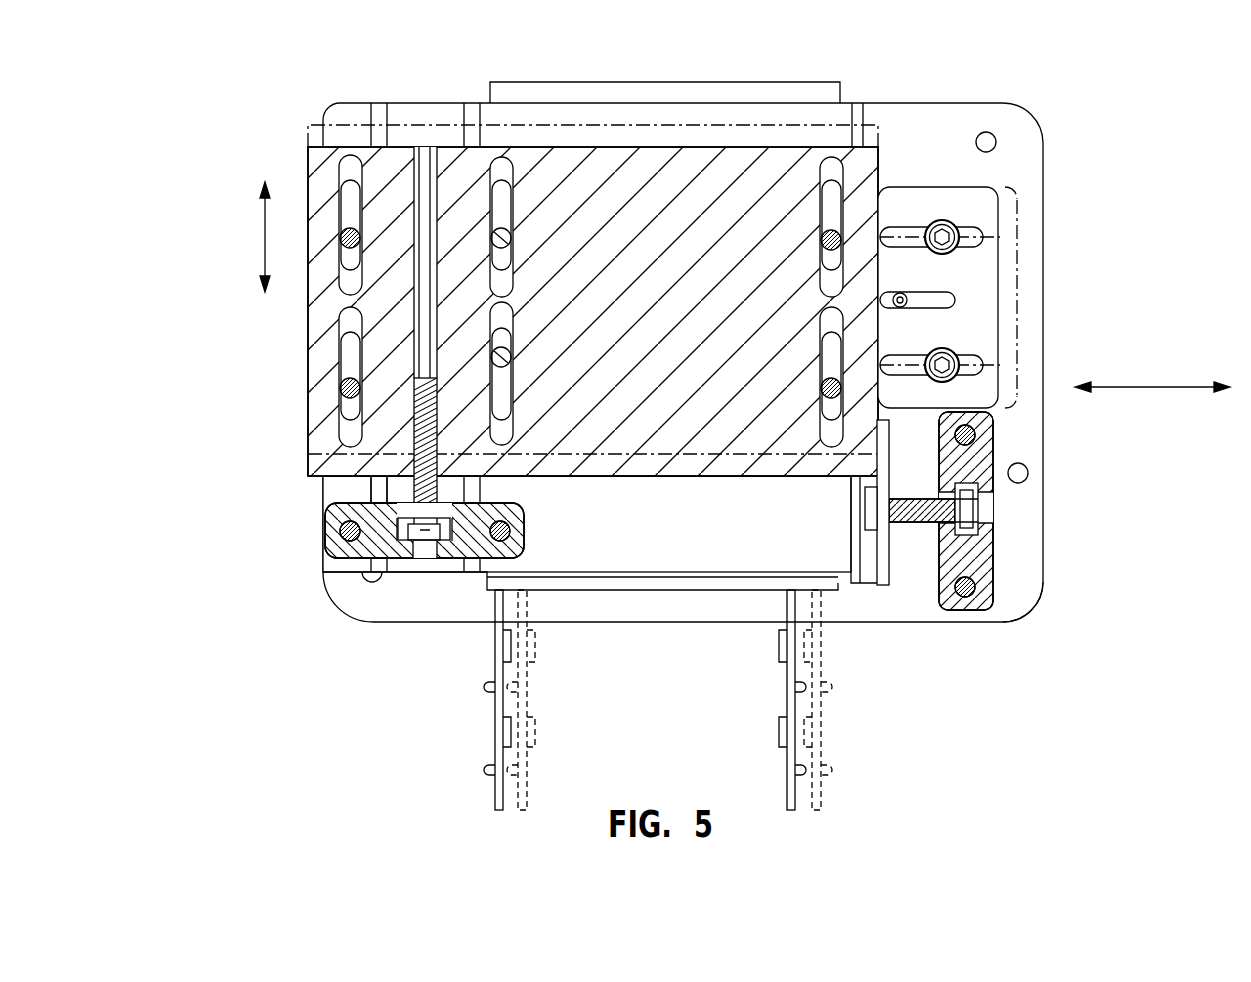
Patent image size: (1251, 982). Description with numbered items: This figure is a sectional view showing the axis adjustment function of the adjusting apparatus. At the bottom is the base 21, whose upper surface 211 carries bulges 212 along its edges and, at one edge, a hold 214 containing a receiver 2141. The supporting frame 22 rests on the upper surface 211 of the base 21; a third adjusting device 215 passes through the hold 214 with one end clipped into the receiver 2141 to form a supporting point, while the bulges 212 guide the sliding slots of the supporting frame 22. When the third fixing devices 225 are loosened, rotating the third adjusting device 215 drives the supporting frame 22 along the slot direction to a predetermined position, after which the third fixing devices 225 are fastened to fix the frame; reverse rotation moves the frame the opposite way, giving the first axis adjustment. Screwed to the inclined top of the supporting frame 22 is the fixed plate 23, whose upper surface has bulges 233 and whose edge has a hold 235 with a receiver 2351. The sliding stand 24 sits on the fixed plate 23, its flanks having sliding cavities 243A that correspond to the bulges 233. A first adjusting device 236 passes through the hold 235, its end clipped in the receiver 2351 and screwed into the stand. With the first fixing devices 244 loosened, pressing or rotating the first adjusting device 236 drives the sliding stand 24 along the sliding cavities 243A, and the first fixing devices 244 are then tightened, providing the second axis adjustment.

The base 21 is at (1043, 153).
The upper surface 211 is at (1015, 590).
The bulges 212 is at (905, 292).
The hold 214 is at (993, 435).
The receiver 2141 is at (993, 487).
The third adjusting device 215 is at (898, 523).
The supporting frame 22 is at (998, 322).
The third fixing devices 225 is at (958, 224).
The fixed plate 23 is at (425, 565).
The bulges 233 is at (425, 376).
The hold 235 is at (330, 540).
The receiver 2351 is at (405, 530).
The first adjusting device 236 is at (410, 494).
The sliding stand 24 is at (315, 160).
The sliding cavities 243A is at (495, 355).
The first fixing devices 244 is at (343, 390).